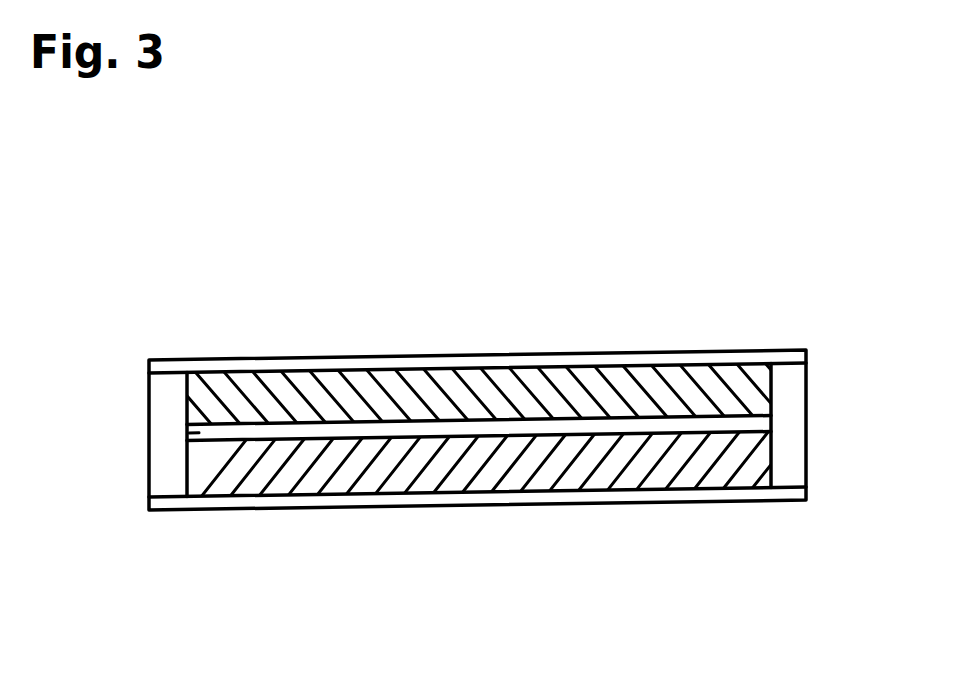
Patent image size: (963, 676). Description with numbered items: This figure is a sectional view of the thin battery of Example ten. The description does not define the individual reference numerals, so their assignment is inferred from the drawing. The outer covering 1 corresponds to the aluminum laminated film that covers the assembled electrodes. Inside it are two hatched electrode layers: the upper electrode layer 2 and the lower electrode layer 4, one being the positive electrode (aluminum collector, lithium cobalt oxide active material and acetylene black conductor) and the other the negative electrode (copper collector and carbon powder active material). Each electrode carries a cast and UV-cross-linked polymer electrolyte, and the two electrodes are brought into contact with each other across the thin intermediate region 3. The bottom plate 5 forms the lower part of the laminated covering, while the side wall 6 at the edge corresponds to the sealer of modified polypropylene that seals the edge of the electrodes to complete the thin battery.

The battery case 1 is at (688, 358).
The positive electrode 2 is at (324, 381).
The separator 3 is at (190, 434).
The negative electrode 4 is at (503, 473).
The bottom plate 5 is at (299, 496).
The side wall 6 is at (792, 433).